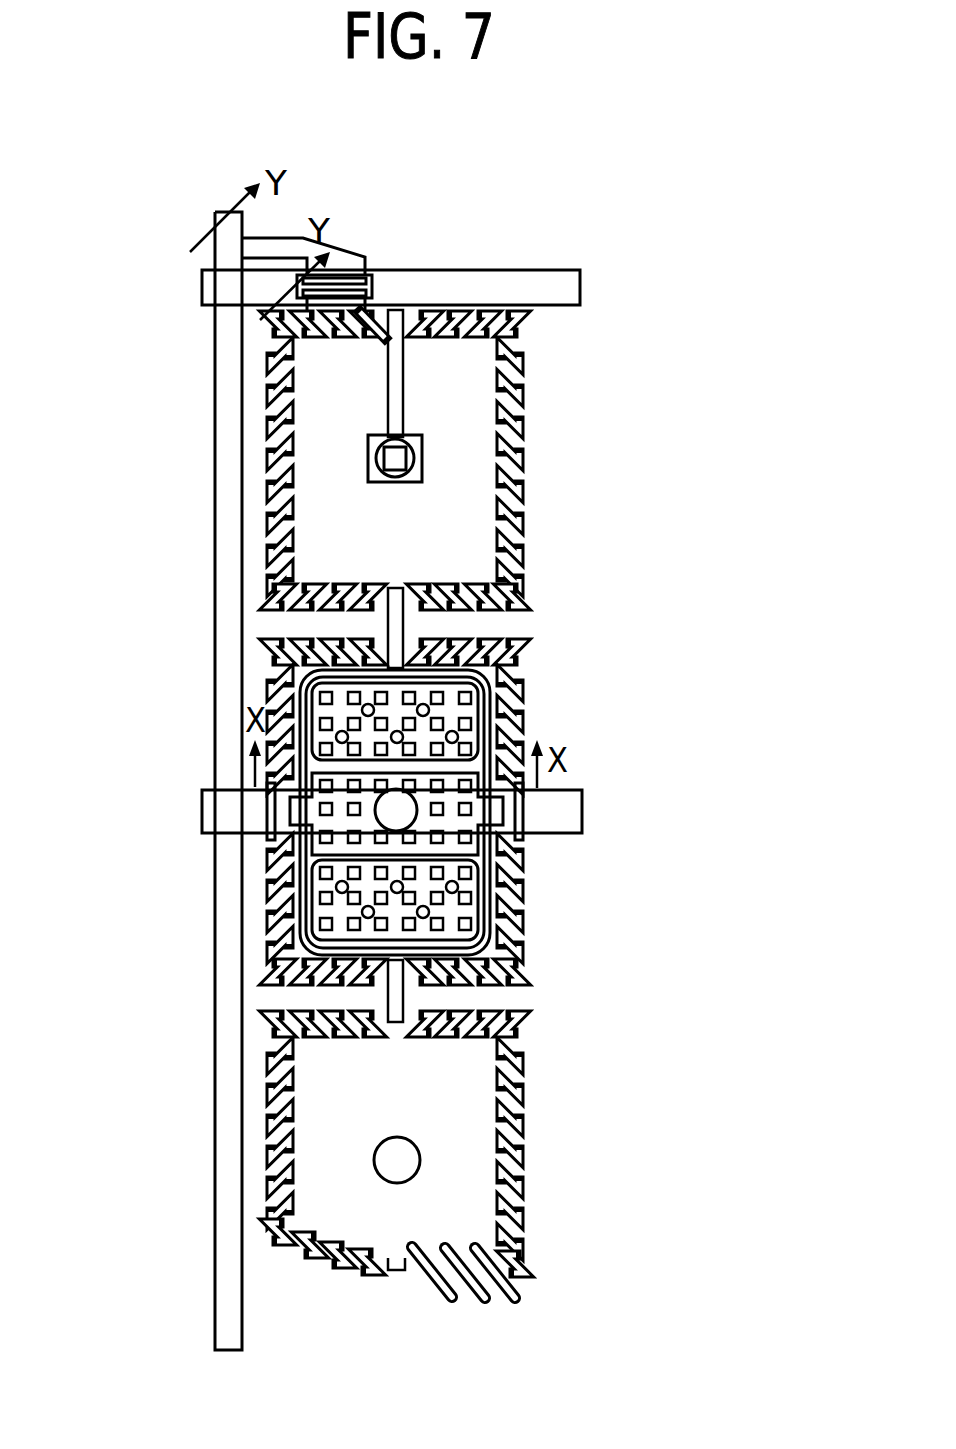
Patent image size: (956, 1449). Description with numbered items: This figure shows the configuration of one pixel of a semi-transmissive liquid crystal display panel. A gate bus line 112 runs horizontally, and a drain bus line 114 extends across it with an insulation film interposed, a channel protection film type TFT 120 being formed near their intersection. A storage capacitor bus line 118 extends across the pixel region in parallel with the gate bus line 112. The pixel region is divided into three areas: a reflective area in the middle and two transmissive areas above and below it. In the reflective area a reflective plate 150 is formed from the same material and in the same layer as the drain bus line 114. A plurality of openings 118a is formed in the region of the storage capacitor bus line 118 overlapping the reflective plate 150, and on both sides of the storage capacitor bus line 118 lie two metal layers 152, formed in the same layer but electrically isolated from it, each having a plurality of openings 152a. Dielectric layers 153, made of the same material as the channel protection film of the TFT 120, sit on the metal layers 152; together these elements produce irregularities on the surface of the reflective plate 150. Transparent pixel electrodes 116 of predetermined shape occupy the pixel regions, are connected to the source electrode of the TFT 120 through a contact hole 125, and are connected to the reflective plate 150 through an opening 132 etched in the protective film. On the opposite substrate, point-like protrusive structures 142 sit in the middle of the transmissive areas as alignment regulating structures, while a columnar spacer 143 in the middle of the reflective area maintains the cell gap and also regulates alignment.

The gate bus line 112 is at (202, 290).
The drain bus line 114 is at (226, 212).
The pixel electrode 116 is at (320, 436).
The storage capacitor bus line 118 is at (200, 828).
The opening 118a is at (480, 850).
The TFT 120 is at (364, 240).
The contact hole 125 is at (400, 480).
The opening 132 is at (525, 812).
The point-like protrusive structure 142 is at (422, 442).
The columnar spacer 143 is at (372, 804).
The reflective plate 150 is at (300, 692).
The metal layer 152 is at (505, 668).
The opening 152a is at (492, 690).
The dielectric layer 153 is at (455, 737).